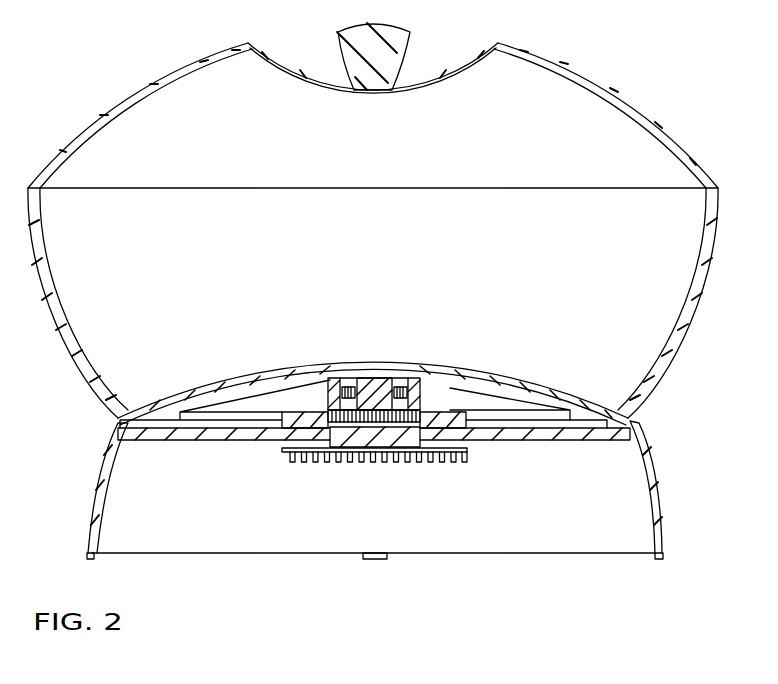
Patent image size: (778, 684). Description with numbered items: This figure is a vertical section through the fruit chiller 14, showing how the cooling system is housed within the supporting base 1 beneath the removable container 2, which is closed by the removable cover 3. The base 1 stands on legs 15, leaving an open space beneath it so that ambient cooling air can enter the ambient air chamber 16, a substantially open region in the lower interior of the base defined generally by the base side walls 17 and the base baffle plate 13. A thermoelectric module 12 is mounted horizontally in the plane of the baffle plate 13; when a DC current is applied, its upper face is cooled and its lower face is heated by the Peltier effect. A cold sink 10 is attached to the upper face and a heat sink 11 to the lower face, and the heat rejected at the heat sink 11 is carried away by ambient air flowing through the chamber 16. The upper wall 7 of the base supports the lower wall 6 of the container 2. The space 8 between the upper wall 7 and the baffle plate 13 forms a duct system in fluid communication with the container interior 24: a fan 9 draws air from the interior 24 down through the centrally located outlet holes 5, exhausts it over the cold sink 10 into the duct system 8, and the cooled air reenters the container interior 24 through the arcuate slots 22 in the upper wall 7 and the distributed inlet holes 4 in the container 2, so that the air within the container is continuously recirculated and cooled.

The supporting base 1 is at (96, 478).
The removable container 2 is at (40, 285).
The removable cover 3 is at (127, 97).
The inlet holes 4 is at (160, 400).
The outlet holes 5 is at (378, 380).
The lower wall 6 is at (500, 378).
The upper wall 7 is at (535, 398).
The space 8 is at (448, 394).
The fan 9 is at (352, 385).
The cold sink 10 is at (292, 418).
The heat sink 11 is at (320, 462).
The thermoelectric module 12 is at (400, 447).
The base baffle plate 13 is at (258, 442).
The fruit chiller 14 is at (618, 88).
The legs 15 is at (88, 556).
The ambient air chamber 16 is at (620, 508).
The base side walls 17 is at (642, 525).
The arcuate slots 22 is at (175, 422).
The container interior 24 is at (366, 236).